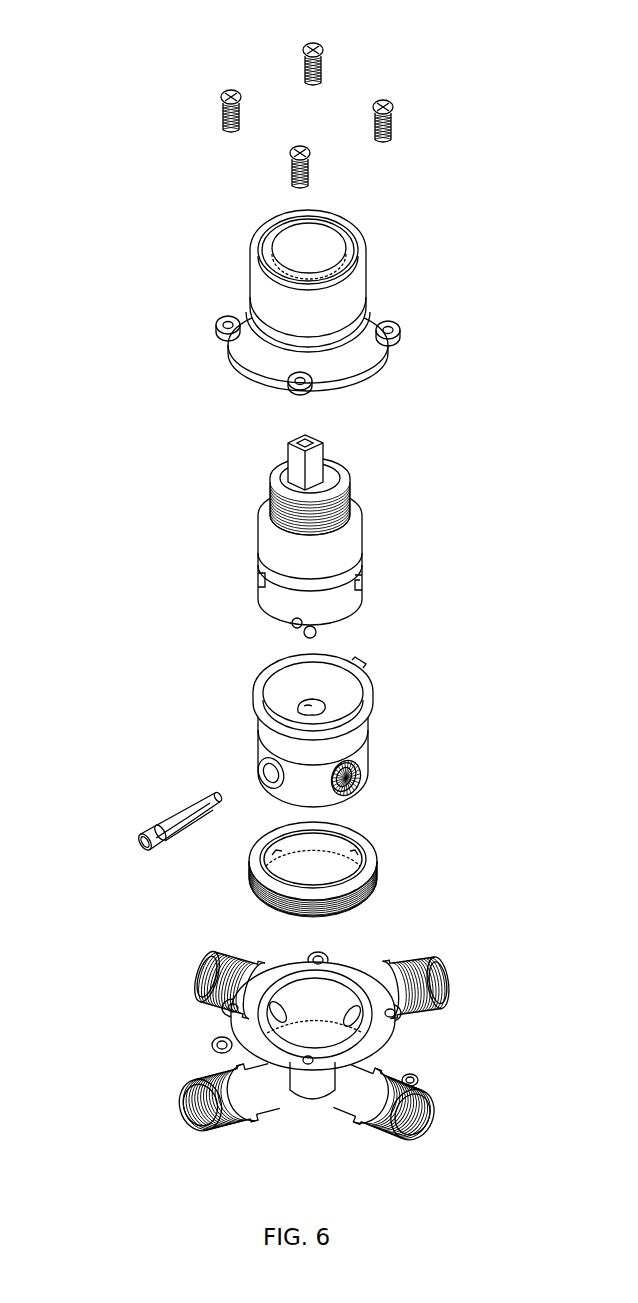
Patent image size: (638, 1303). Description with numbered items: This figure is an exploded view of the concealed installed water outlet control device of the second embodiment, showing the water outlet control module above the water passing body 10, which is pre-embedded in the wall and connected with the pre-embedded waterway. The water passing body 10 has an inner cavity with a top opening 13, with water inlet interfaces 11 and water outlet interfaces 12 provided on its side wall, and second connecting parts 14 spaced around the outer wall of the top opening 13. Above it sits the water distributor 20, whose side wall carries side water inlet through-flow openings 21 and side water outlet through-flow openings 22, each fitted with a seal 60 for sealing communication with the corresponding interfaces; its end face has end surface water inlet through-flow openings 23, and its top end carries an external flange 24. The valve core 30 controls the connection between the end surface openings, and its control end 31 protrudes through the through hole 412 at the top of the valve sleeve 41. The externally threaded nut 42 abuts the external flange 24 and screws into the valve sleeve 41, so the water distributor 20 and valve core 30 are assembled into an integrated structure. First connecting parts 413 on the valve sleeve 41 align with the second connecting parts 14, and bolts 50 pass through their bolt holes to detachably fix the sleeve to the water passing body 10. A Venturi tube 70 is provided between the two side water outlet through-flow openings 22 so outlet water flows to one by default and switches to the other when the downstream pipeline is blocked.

The water passing body 10 is at (304, 1042).
The water inlet interface 11 is at (289, 1044).
The water outlet interface 12 is at (322, 1026).
The top opening 13 is at (242, 969).
The second connecting part 14 is at (472, 999).
The water distributor 20 is at (252, 732).
The side water inlet through-flow opening 21 is at (408, 758).
The side water outlet through-flow opening 22 is at (217, 755).
The end surface water inlet through-flow opening 23 is at (379, 680).
The external flange 24 is at (259, 674).
The valve core 30 is at (347, 548).
The control end 31 is at (360, 456).
The valve sleeve 41 is at (361, 302).
The through hole 412 is at (373, 229).
The first connecting part 413 is at (369, 321).
The nut 42 is at (370, 869).
The bolt 50 is at (367, 108).
The seal 60 is at (408, 777).
The Venturi tube 70 is at (120, 813).